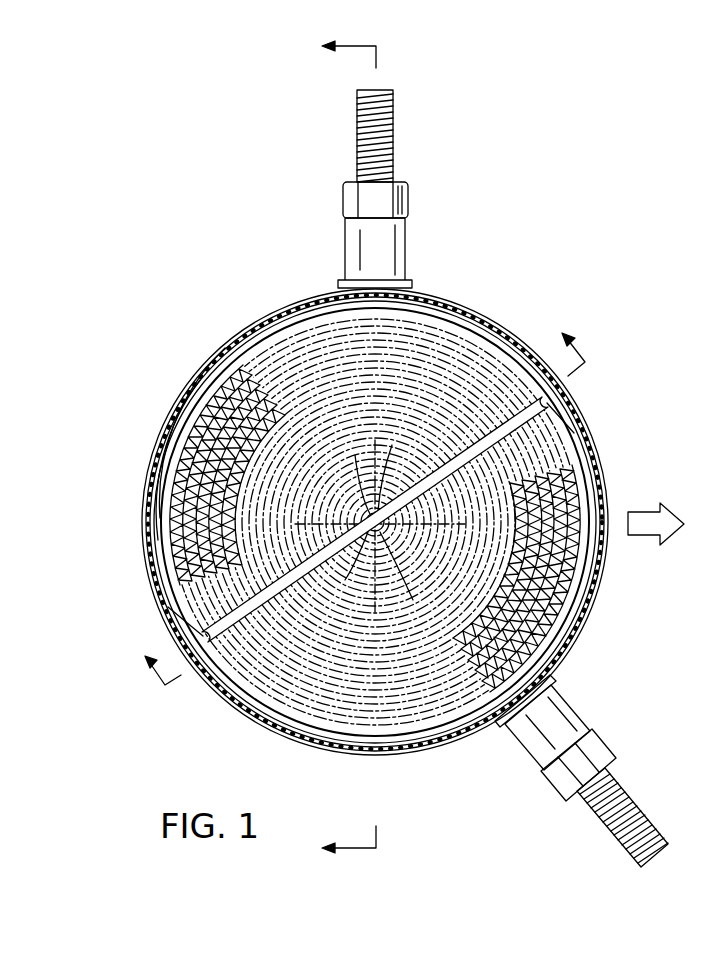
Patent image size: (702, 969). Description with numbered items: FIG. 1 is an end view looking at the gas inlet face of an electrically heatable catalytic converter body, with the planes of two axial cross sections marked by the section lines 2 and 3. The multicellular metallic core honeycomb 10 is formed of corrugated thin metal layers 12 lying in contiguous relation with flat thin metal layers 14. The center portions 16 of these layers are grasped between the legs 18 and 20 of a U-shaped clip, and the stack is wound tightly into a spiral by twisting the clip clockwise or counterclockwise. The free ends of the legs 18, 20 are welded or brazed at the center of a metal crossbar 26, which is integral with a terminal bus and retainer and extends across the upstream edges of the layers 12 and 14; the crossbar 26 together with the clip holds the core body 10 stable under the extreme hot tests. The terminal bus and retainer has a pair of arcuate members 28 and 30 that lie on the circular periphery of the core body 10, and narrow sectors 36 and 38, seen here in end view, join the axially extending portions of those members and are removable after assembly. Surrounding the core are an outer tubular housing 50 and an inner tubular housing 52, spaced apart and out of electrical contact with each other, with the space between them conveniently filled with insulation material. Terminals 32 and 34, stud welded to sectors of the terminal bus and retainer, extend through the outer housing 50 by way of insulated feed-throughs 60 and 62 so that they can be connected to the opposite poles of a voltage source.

The section line 2— 2 is at (133, 590).
The section line 3— 3 is at (357, 496).
The multicellular metallic core honeycomb 10 is at (455, 352).
The corrugated thin metal layers 12 is at (582, 623).
The flat thin metal layers 14 is at (172, 515).
The center portions 16 is at (380, 478).
The leg of U-shaped clip 18 is at (394, 548).
The leg of U-shaped clip 20 is at (365, 513).
The metal crossbar 26 is at (230, 688).
The arcuate member 28 is at (600, 468).
The arcuate member 30 is at (232, 352).
The terminal 32 is at (392, 118).
The terminal 34 is at (620, 792).
The sector 36 is at (202, 398).
The sector 38 is at (560, 663).
The outer tubular housing 50 is at (445, 297).
The inner tubular housing 52 is at (508, 312).
The insulated feed-through 60 is at (383, 240).
The insulated feed-through 62 is at (517, 753).